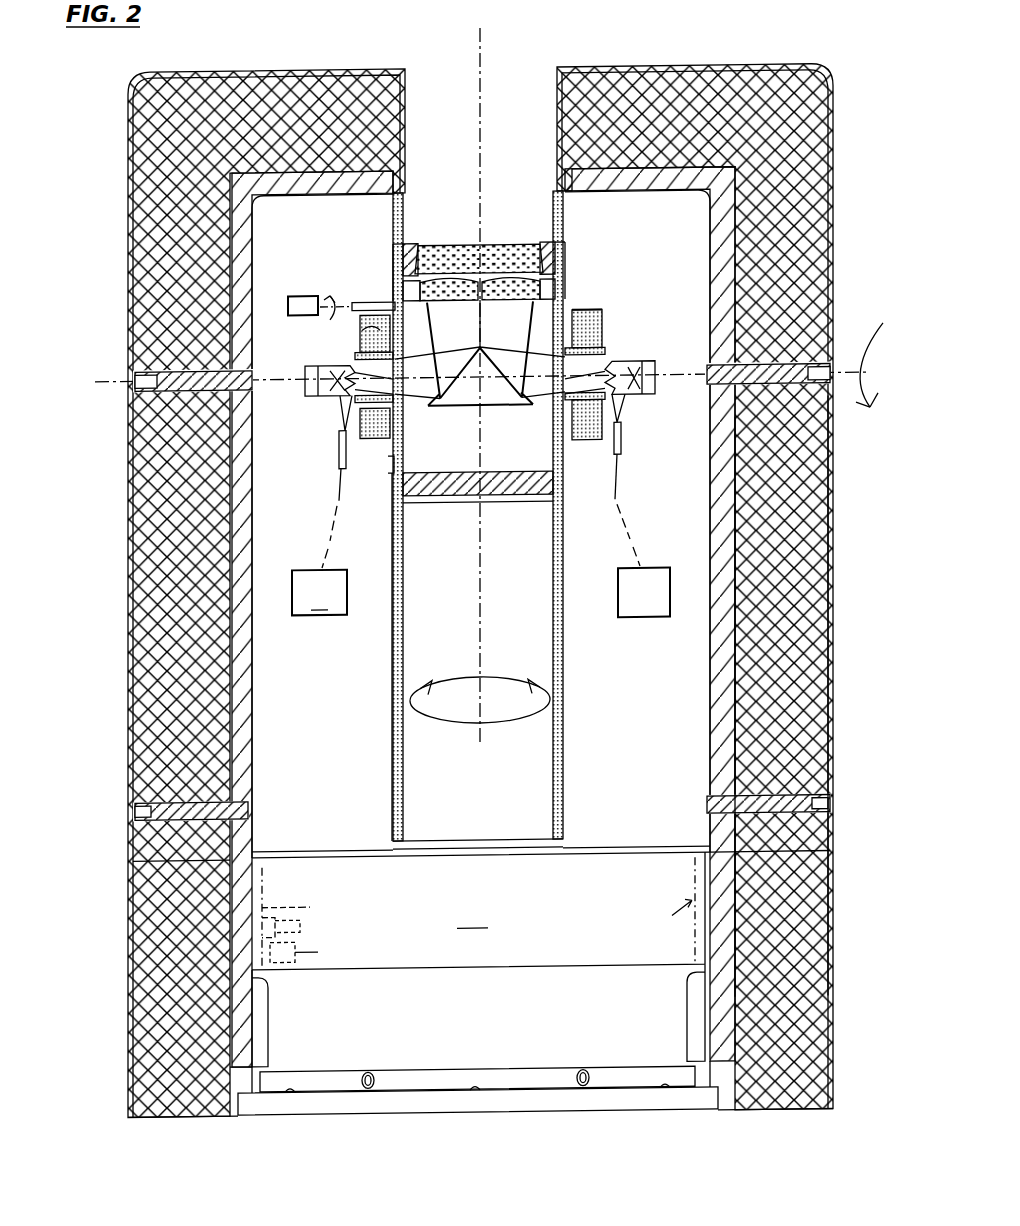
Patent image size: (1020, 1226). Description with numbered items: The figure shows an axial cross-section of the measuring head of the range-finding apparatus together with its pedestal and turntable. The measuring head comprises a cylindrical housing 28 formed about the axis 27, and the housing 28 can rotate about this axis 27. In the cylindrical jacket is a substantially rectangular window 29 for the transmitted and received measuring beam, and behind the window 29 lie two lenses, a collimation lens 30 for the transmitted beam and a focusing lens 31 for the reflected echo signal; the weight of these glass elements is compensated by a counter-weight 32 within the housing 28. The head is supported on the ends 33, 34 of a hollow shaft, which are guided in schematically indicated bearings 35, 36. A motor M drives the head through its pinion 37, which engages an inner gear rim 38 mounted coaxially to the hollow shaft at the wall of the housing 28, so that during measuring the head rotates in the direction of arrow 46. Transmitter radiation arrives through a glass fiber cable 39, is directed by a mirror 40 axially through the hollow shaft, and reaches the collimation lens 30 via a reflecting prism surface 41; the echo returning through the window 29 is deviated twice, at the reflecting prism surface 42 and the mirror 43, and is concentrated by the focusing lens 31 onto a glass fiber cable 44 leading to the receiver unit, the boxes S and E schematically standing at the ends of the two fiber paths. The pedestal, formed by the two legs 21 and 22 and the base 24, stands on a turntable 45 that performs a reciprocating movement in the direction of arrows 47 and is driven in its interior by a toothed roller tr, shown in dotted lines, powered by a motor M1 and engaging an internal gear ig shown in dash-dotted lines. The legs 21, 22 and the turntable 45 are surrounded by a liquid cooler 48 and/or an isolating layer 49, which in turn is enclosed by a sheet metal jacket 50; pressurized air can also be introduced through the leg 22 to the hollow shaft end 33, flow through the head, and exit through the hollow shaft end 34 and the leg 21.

The leg 21 is at (693, 238).
The leg 22 is at (317, 218).
The base 24 is at (418, 856).
The axis 27 is at (305, 377).
The cylindrical housing 28 is at (563, 492).
The window 29 is at (479, 253).
The collimation lens 30 is at (446, 290).
The focusing lens 31 is at (565, 270).
The counter-weight 32 is at (497, 487).
The hollow shaft end 33 is at (358, 355).
The hollow shaft end 34 is at (608, 352).
The bearing 35 is at (373, 434).
The bearing 36 is at (605, 321).
The pinion 37 is at (388, 296).
The inner gear rim 38 is at (391, 476).
The glass fiber cable 39 is at (338, 447).
The mirror 40 is at (336, 383).
The reflecting prism surface 41 is at (437, 397).
The reflecting prism surface 42 is at (525, 397).
The mirror 43 is at (640, 365).
The glass fiber cable 44 is at (622, 437).
The turntable 45 is at (478, 959).
The arrow 46 is at (880, 331).
The arrows 47 is at (445, 720).
The liquid cooler 48 is at (740, 645).
The isolating layer 49 is at (797, 509).
The sheet metal jacket 50 is at (832, 547).
The motor M is at (303, 294).
The transmitter S is at (319, 593).
The receiver E is at (644, 593).
The toothed roller tr is at (301, 917).
The motor M1 is at (312, 952).
The internal gear ig is at (667, 910).